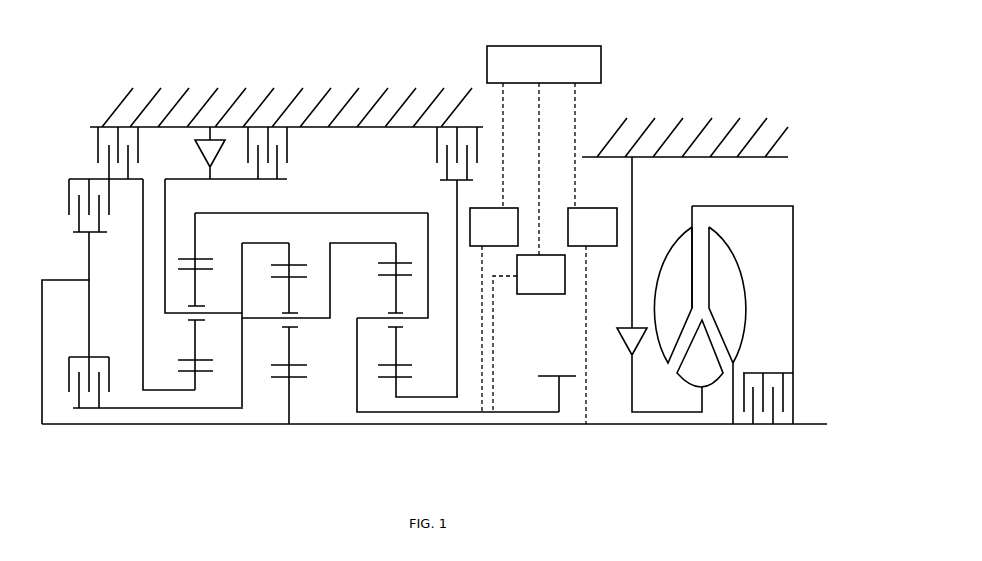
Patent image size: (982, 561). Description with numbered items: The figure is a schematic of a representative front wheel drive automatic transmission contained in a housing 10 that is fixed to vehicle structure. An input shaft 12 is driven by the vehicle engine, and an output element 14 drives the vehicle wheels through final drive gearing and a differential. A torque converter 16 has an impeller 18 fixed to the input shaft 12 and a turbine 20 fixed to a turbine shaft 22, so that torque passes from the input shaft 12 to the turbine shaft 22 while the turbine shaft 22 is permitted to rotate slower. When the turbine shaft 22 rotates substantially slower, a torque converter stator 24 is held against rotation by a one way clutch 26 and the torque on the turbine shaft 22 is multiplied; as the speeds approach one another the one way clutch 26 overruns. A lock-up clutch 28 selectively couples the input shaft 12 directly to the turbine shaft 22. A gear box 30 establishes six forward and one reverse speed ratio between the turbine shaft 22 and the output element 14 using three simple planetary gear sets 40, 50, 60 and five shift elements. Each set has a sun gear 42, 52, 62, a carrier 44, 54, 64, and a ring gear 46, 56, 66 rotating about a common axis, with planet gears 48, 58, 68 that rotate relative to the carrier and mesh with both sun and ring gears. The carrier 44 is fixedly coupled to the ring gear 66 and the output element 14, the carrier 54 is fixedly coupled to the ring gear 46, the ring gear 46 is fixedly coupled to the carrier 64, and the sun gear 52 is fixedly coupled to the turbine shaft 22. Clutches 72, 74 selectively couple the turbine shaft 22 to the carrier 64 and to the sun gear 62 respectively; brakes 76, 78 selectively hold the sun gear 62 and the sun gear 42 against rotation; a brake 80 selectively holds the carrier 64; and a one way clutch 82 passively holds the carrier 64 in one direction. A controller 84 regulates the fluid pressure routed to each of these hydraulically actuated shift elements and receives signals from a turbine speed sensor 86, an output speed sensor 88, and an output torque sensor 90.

The housing 10 is at (369, 102).
The input shaft 12 is at (810, 425).
The output element 14 is at (552, 398).
The torque converter 16 is at (651, 235).
The impeller 18 is at (673, 295).
The turbine 20 is at (727, 325).
The turbine shaft 22 is at (575, 426).
The torque converter stator 24 is at (700, 353).
The one way clutch 26 is at (622, 340).
The lock-up clutch 28 is at (757, 372).
The gear box 30 is at (303, 52).
The simple planetary gear set 40 is at (458, 392).
The sun gear 42 is at (398, 388).
The carrier 44 is at (417, 325).
The ring gear 46 is at (378, 255).
The planet gears 48 is at (390, 340).
The simple planetary gear set 50 is at (291, 457).
The sun gear 52 is at (292, 407).
The carrier 54 is at (307, 322).
The ring gear 56 is at (292, 258).
The planet gears 58 is at (283, 343).
The simple planetary gear set 60 is at (121, 372).
The sun gear 62 is at (197, 385).
The carrier 64 is at (243, 327).
The ring gear 66 is at (200, 232).
The planet gears 68 is at (197, 333).
The clutch 72 is at (110, 373).
The clutch 74 is at (110, 193).
The brake 76 is at (98, 150).
The brake 78 is at (437, 147).
The brake 80 is at (288, 148).
The one way clutch 82 is at (195, 160).
The controller 84 is at (601, 65).
The turbine speed sensor 86 is at (594, 246).
The output speed sensor 88 is at (545, 294).
The output torque sensor 90 is at (507, 208).